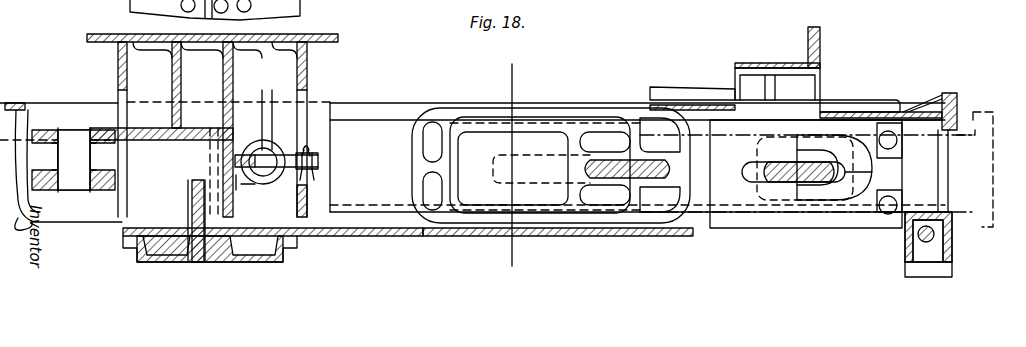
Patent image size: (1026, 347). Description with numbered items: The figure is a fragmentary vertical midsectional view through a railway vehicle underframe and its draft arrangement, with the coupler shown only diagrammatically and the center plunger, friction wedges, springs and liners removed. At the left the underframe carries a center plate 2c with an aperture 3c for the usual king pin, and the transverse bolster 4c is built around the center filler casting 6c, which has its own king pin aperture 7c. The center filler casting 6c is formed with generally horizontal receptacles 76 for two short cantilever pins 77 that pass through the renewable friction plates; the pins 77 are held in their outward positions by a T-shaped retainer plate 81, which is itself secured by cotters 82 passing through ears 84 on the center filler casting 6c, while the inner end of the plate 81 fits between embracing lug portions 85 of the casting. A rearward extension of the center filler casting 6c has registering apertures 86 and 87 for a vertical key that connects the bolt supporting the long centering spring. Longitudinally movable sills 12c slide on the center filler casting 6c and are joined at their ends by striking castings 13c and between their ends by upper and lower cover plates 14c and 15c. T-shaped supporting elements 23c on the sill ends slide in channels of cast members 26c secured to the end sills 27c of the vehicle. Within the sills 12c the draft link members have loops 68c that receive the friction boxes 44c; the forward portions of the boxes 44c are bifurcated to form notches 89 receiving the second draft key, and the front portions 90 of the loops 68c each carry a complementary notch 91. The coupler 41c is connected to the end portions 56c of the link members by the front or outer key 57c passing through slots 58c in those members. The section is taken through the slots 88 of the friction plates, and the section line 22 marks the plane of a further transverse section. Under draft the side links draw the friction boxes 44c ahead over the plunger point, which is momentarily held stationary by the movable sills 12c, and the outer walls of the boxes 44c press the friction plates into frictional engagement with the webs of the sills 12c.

The center plate 2c is at (283, 258).
The king pin aperture of center plate 3c is at (216, 240).
The bolster 4c is at (320, 233).
The center filler casting 6c is at (308, 77).
The king pin aperture 7c is at (210, 185).
The sills 12c is at (396, 105).
The striking castings 13c is at (950, 95).
The upper cover plate 14c is at (650, 100).
The lower cover plate 15c is at (535, 237).
The section line 22 is at (514, 168).
The T-shaped supporting elements 23c is at (862, 98).
The cast members 26c is at (822, 82).
The end sills 27c is at (808, 30).
The coupler 41c is at (870, 226).
The friction boxes 44c is at (455, 223).
The end portions of link members 56c is at (872, 182).
The front or outer key 57c is at (785, 182).
The slots 58c is at (752, 163).
The loops of draft link members 68c is at (438, 118).
The horizontal apertures or receptacles 76 is at (308, 125).
The cantilever pins 77 is at (308, 190).
The T-shaped retainer plate 81 is at (272, 148).
The cotters 82 is at (311, 147).
The ears 84 is at (320, 172).
The embracing lug portions 85 is at (264, 157).
The aperture 86 is at (78, 132).
The aperture 87 is at (80, 195).
The slots 88 is at (522, 152).
The bifurcated forward portions 89 is at (596, 178).
The front portions of loops 90 is at (672, 200).
The notch 91 is at (655, 205).